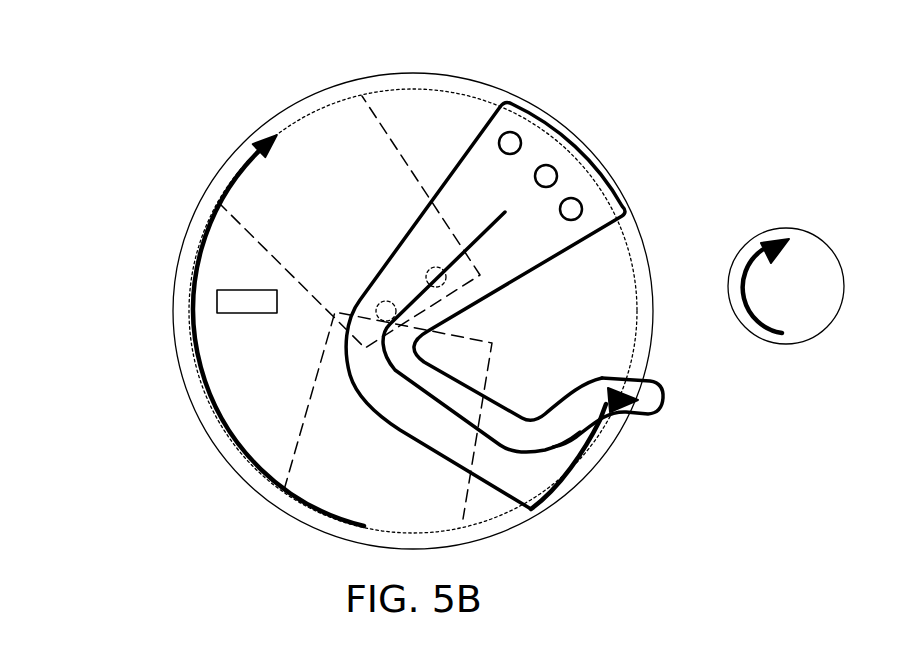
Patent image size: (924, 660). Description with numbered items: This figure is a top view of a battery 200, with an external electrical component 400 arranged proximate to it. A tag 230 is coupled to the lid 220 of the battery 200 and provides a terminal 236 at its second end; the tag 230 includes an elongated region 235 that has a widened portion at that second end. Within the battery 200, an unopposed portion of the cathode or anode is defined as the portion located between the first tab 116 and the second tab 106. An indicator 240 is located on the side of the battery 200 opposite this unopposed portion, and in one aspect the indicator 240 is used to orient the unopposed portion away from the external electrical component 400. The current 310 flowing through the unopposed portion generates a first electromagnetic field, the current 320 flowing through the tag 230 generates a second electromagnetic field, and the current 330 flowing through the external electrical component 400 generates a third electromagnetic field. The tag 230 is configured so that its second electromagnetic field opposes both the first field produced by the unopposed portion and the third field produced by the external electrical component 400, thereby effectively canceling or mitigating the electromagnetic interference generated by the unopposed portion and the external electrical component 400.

The battery 200 is at (62, 83).
The current 310 is at (192, 265).
The lid 220 is at (253, 132).
The first tab 116 is at (392, 138).
The second tab 106 is at (293, 457).
The indicator 240 is at (217, 303).
The elongated region 235 is at (540, 240).
The terminal 236 is at (647, 402).
The tag 230 is at (505, 173).
The current 320 is at (533, 452).
The external electrical component 400 is at (840, 258).
The current 330 is at (757, 241).